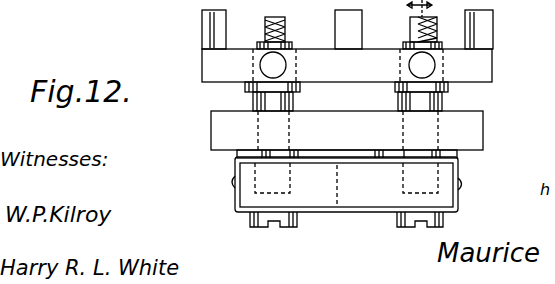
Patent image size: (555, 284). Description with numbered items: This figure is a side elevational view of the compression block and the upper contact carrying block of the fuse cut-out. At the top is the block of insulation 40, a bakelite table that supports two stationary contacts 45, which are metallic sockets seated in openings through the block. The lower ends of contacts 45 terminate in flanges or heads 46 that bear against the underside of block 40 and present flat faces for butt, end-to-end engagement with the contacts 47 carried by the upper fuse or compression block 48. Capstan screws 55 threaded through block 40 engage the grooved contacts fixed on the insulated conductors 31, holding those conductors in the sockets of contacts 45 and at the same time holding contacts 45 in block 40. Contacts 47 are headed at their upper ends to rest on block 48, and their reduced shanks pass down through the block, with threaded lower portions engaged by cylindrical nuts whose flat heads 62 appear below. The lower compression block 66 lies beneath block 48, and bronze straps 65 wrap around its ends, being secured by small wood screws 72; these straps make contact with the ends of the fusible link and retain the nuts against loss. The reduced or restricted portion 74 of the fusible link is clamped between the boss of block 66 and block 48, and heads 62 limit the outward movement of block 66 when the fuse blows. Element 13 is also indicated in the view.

The collar 13 is at (398, 100).
The insulated conductors 31 is at (270, 17).
The block of insulation 40 is at (202, 67).
The stationary contacts 45 is at (290, 46).
The flanges or heads 46 is at (300, 88).
The contacts 47 is at (253, 98).
The upper fuse or compression block 48 is at (483, 137).
The capstan screws 55 is at (284, 65).
The flat heads 62 is at (290, 224).
The straps 65 is at (235, 199).
The lower compression block 66 is at (340, 195).
The small wood screws 72 is at (232, 183).
The reduced or restricted portion 74 is at (322, 150).